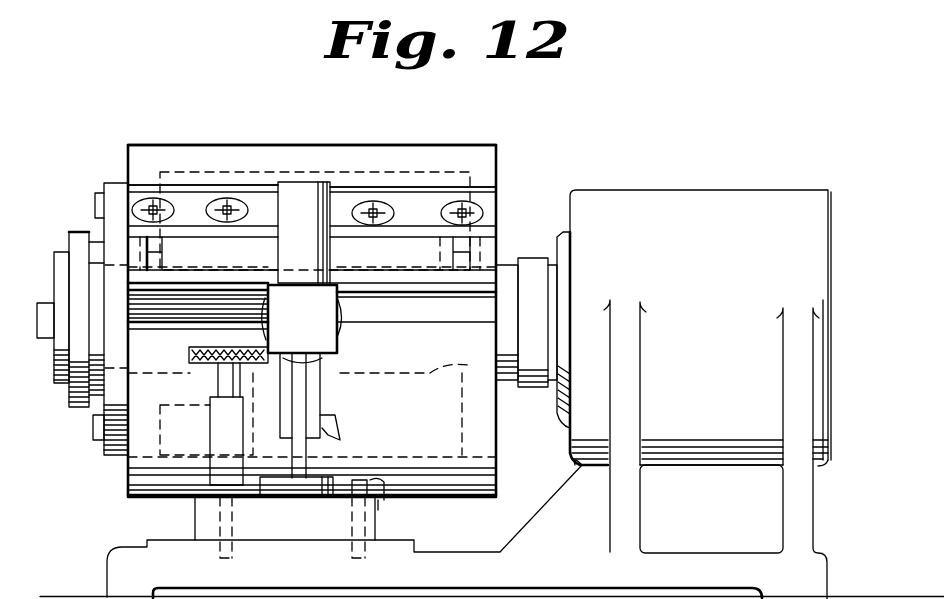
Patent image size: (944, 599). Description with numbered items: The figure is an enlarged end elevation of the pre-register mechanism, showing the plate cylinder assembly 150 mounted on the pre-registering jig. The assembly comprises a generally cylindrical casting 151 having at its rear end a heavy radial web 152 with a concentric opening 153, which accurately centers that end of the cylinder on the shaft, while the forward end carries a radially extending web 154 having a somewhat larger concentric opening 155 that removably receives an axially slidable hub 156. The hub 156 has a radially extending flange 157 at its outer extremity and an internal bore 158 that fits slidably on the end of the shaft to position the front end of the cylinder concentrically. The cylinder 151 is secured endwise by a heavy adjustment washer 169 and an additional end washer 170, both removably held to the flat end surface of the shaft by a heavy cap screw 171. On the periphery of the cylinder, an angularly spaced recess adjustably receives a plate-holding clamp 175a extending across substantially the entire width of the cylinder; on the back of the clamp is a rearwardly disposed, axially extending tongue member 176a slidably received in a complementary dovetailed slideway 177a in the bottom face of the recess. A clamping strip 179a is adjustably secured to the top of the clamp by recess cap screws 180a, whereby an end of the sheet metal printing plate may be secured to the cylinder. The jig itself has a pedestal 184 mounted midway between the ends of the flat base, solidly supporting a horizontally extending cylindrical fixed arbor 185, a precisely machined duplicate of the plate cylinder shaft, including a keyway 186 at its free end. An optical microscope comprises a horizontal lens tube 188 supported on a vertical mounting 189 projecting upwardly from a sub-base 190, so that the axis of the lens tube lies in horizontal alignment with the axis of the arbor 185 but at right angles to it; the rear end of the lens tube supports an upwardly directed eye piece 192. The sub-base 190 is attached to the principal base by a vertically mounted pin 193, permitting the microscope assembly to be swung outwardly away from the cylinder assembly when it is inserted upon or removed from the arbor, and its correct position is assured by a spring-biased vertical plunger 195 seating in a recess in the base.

The plate cylinder assembly 150 is at (156, 128).
The cylindrical casting 151 is at (456, 160).
The radial web 152 is at (496, 422).
The concentric opening 153 is at (438, 367).
The radially extending web 154 is at (118, 482).
The concentric opening 155 is at (160, 393).
The axially slidable hub 156 is at (100, 408).
The radially extending flange 157 is at (100, 456).
The internal bore 158 is at (148, 366).
The adjustment washer 169 is at (81, 231).
The end washer 170 is at (62, 250).
The cap screw 171 is at (45, 342).
The plate-holding clamp 175a is at (498, 232).
The tongue member 176a is at (168, 247).
The dovetailed slideway 177a is at (176, 266).
The clamping strip 179a is at (485, 212).
The recess cap screw 180a is at (375, 203).
The pedestal 184 is at (723, 208).
The fixed arbor 185 is at (510, 257).
The keyway 186 is at (304, 232).
The lens tube 188 is at (343, 335).
The vertical mounting 189 is at (322, 412).
The sub-base 190 is at (362, 533).
The eye piece 192 is at (333, 197).
The vertically mounted pin 193 is at (380, 492).
The spring-biased vertical plunger 195 is at (222, 385).